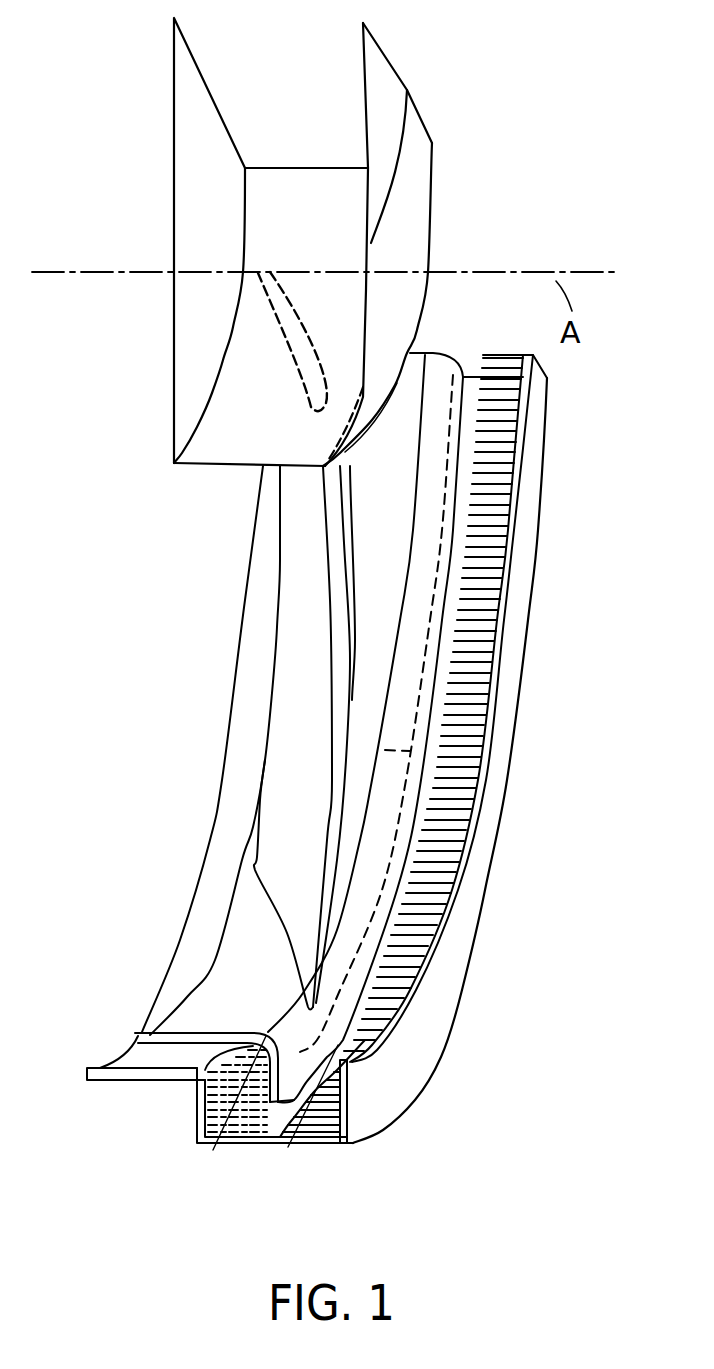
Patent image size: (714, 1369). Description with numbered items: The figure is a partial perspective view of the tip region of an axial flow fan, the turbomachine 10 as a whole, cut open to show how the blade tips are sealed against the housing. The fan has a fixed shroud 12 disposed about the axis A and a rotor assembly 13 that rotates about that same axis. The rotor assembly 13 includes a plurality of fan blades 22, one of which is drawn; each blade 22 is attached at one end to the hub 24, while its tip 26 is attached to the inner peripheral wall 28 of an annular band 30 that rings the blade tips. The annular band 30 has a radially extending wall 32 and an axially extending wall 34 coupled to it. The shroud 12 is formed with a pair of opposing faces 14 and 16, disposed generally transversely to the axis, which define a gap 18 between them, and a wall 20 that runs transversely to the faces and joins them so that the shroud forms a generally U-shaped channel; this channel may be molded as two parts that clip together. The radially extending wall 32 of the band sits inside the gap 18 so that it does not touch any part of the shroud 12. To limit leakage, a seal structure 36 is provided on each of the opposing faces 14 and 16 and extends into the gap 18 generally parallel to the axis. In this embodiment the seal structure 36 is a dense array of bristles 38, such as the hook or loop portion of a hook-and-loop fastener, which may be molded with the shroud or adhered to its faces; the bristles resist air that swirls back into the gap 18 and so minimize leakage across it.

The turbomachine 10 is at (168, 792).
The shroud 12 is at (410, 1080).
The rotor assembly 13 is at (203, 467).
The opposing face 14 is at (210, 1128).
The opposing face 16 is at (326, 1133).
The gap 18 is at (260, 1130).
The wall 20 is at (291, 1128).
The fan blade 22 is at (279, 693).
The hub 24 is at (432, 200).
The tip 26 is at (292, 940).
The inner peripheral wall 28 is at (197, 1012).
The annular band 30 is at (143, 1037).
The radially extending wall 32 is at (300, 1078).
The axially extending wall 34 is at (248, 1026).
The seal structure 36 is at (466, 705).
The bristles 38 is at (497, 600).